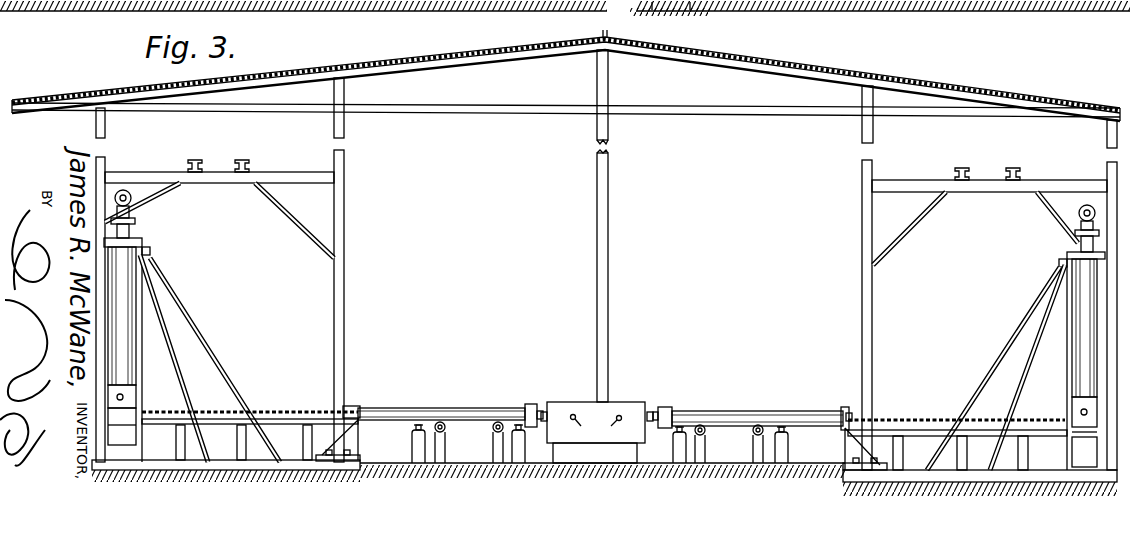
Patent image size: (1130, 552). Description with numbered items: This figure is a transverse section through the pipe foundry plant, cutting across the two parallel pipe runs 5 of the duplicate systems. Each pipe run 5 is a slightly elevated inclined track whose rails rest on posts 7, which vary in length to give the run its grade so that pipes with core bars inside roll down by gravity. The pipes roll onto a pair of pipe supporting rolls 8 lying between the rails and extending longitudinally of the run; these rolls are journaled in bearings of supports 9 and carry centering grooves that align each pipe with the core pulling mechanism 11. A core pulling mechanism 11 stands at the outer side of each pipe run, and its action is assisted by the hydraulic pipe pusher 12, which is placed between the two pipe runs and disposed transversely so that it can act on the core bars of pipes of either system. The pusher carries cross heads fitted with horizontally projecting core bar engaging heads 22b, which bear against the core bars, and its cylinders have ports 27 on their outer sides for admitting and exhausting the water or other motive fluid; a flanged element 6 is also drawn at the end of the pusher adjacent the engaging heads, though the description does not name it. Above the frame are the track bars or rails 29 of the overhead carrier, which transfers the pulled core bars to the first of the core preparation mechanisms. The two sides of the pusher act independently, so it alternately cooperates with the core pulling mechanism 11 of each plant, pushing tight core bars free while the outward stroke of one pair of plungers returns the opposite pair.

The pipe run 5 is at (419, 424).
The flange coupling 6 is at (535, 404).
The posts 7 is at (412, 450).
The pipe supporting rolls 8 is at (493, 428).
The supports 9 is at (493, 450).
The core pulling mechanism 11 is at (131, 372).
The hydraulic pipe pusher 12 is at (565, 402).
The core bar engaging heads 22b is at (545, 410).
The ports 27 is at (596, 429).
The track bars or rails 29 is at (240, 166).